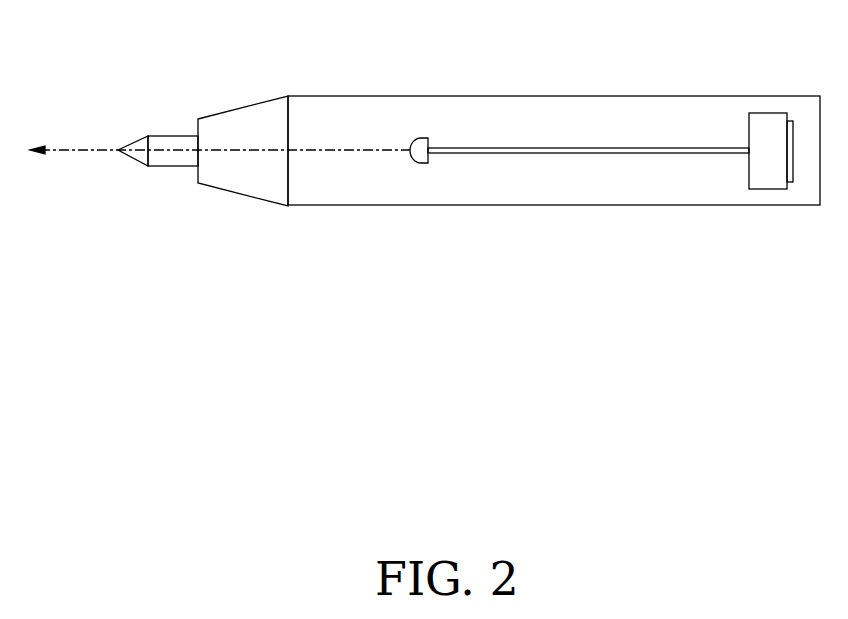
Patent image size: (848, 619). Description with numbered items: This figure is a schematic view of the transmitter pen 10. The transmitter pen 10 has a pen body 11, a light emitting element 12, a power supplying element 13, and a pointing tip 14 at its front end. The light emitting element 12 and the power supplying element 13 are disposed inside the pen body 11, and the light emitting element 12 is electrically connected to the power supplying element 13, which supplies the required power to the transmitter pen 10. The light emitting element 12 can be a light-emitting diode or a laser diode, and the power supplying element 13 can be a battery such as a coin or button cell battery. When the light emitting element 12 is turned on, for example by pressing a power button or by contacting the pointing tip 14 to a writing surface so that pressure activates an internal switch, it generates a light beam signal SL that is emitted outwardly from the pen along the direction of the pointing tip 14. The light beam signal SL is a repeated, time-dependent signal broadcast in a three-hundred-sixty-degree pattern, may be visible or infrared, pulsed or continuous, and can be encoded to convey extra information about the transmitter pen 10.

The transmitter pen 10 is at (452, 143).
The pen body 11 is at (725, 96).
The light emitting element 12 is at (412, 163).
The power supplying element 13 is at (768, 189).
The pointing tip 14 is at (118, 150).
The light beam signal SL is at (65, 150).